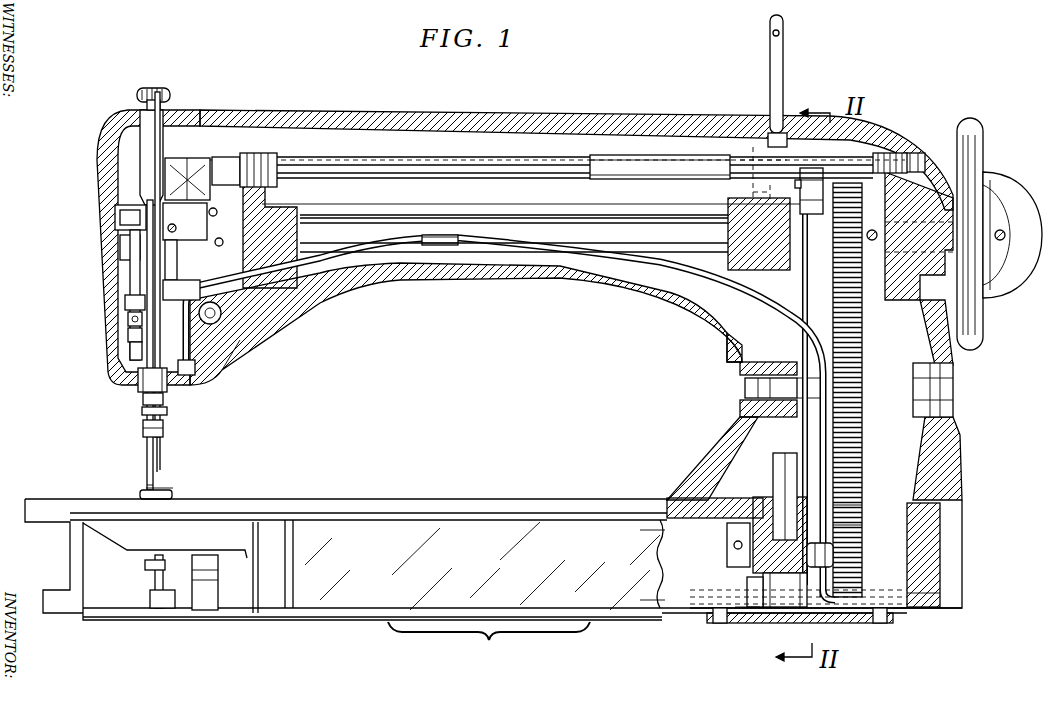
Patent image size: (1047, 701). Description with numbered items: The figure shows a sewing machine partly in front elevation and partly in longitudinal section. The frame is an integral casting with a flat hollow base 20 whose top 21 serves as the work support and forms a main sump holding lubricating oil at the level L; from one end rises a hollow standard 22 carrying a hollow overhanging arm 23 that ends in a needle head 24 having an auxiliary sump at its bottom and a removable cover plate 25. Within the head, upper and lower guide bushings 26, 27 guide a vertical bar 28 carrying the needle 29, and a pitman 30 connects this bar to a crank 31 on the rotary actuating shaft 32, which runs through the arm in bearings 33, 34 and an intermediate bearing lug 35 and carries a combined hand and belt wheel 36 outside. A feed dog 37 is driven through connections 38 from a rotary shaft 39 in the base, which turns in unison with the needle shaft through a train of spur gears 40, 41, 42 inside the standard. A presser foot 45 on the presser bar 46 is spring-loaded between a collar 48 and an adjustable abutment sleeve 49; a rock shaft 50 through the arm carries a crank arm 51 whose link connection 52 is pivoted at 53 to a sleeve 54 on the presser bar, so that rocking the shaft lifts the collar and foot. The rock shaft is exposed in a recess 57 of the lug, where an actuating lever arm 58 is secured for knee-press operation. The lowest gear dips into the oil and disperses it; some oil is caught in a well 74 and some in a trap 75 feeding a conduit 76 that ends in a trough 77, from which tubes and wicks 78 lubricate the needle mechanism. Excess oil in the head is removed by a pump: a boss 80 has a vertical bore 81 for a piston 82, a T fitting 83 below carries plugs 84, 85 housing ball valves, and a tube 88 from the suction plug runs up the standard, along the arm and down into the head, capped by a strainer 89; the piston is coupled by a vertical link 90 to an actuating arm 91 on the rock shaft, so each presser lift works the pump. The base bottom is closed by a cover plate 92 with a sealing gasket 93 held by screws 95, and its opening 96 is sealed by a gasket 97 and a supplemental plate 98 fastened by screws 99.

The base 20 is at (489, 647).
The top 21 is at (457, 507).
The standard 22 is at (740, 358).
The overhanging arm 23 is at (458, 250).
The needle head 24 is at (247, 317).
The cover plate 25 is at (97, 210).
The upper guide bushing 26 is at (145, 128).
The lower guide bushing 27 is at (150, 390).
The vertical bar 28 is at (173, 260).
The needle 29 is at (163, 440).
The pitman 30 is at (137, 302).
The crank 31 is at (192, 230).
The rotary actuating shaft 32 is at (642, 240).
The bearing 33 is at (283, 290).
The bearing 34 is at (907, 265).
The bearing lug 35 is at (713, 268).
The combined hand and belt wheel 36 is at (980, 133).
The feed dog 37 is at (172, 493).
The connections 38 is at (135, 560).
The rotary shaft 39 is at (677, 543).
The spur gear 40 is at (920, 197).
The spur gear 41 is at (853, 347).
The spur gear 42 is at (852, 516).
The presser foot 45 is at (140, 492).
The presser bar 46 is at (143, 430).
The collar 48 is at (148, 330).
The abutment sleeve 49 is at (160, 88).
The rock shaft 50 is at (494, 204).
The crank arm 51 is at (130, 215).
The link connection 52 is at (150, 248).
The pivot 53 is at (150, 335).
The sleeve 54 is at (145, 347).
The recess 57 is at (755, 190).
The actuating lever arm 58 is at (733, 163).
The well 74 is at (740, 500).
The trap 75 is at (840, 157).
The conduit 76 is at (622, 162).
The trough 77 is at (225, 165).
The tubes and wicks 78 is at (195, 155).
The boss 80 is at (760, 567).
The vertical bore 81 is at (837, 543).
The piston 82 is at (775, 480).
The T fitting 83 is at (790, 592).
The plug 84 is at (758, 605).
The plug 85 is at (833, 598).
The tube 88 is at (553, 250).
The strainer 89 is at (190, 380).
The vertical link 90 is at (803, 281).
The actuating arm 91 is at (816, 172).
The cover plate 92 is at (322, 620).
The sealing gasket 93 is at (358, 610).
The screws 95 is at (923, 595).
The opening 96 is at (748, 620).
The sealing gasket 97 is at (895, 618).
The supplemental plate 98 is at (863, 622).
The screws 99 is at (722, 624).
The oil level L is at (878, 588).